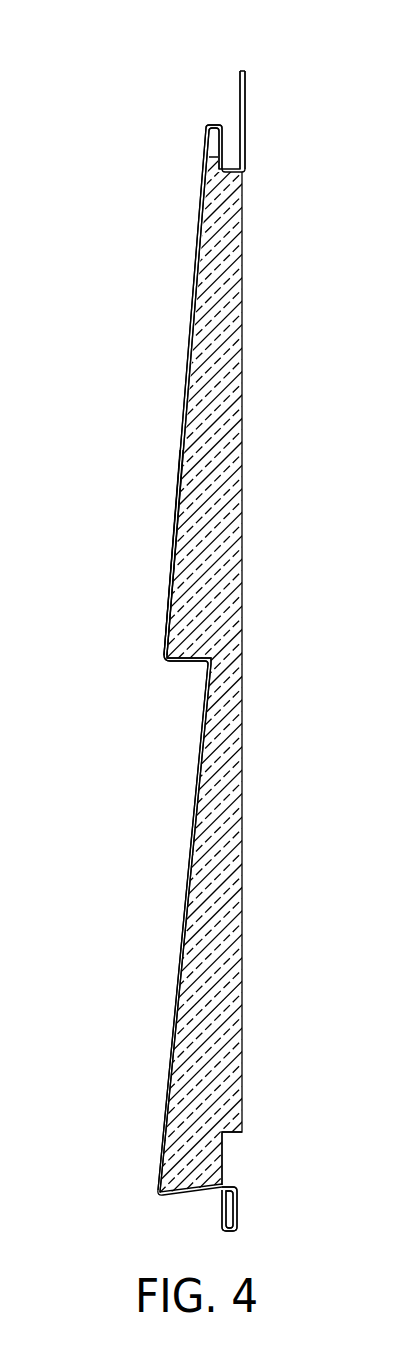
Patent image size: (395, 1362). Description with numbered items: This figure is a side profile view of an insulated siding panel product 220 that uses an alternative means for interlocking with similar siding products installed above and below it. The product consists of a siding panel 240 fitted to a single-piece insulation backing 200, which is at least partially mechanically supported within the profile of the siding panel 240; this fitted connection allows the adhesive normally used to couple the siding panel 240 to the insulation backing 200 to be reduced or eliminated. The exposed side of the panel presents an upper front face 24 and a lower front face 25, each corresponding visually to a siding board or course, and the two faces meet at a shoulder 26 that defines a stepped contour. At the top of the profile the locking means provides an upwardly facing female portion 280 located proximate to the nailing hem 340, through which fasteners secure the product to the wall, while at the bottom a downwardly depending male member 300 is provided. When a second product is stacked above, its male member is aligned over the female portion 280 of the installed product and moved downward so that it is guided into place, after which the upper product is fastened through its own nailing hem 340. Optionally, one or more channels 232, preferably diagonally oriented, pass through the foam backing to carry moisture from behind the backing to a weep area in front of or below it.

The insulation backing 200 is at (233, 533).
The insulated siding panel product 220 is at (142, 486).
The nailing hem 340 is at (238, 87).
The female portion 280 is at (224, 127).
The upper front face 24 is at (190, 366).
The siding panel 240 is at (170, 586).
The shoulder 26 is at (168, 663).
The lower front face 25 is at (188, 872).
The channel 232 is at (232, 1103).
The male member 300 is at (222, 1228).